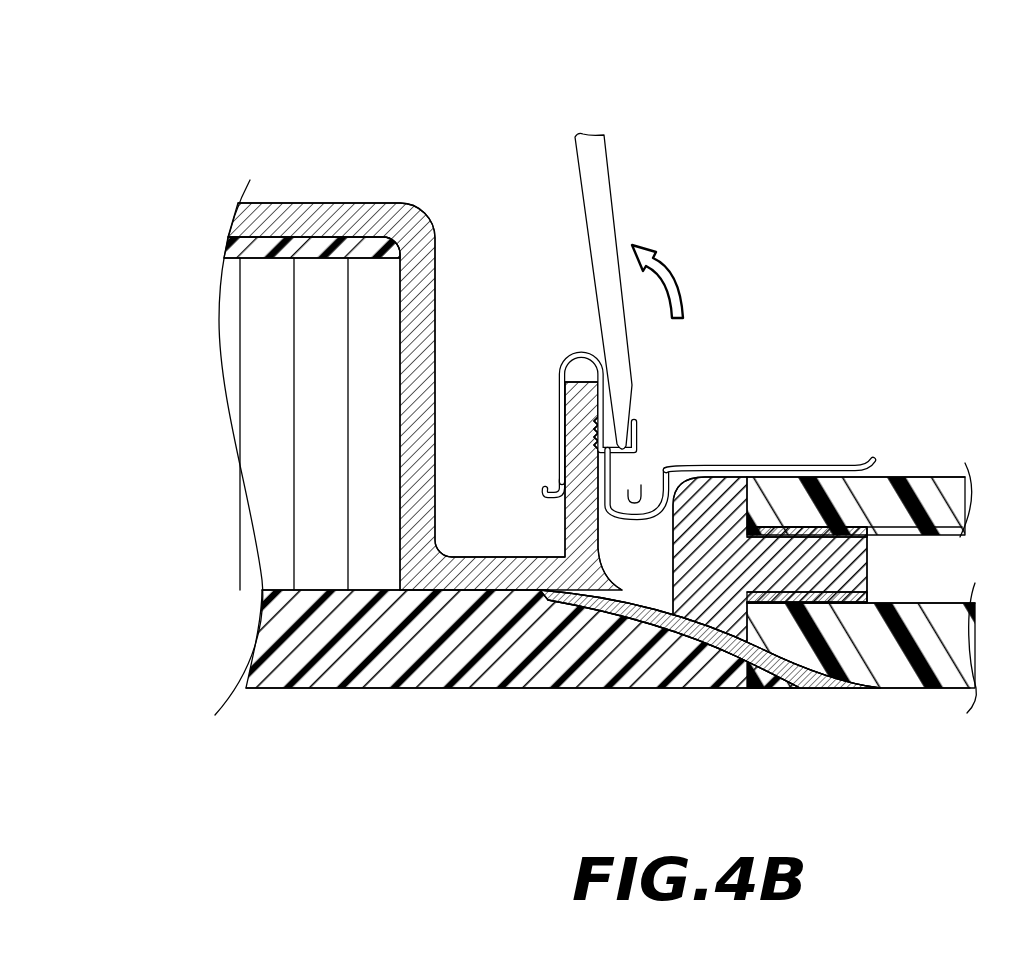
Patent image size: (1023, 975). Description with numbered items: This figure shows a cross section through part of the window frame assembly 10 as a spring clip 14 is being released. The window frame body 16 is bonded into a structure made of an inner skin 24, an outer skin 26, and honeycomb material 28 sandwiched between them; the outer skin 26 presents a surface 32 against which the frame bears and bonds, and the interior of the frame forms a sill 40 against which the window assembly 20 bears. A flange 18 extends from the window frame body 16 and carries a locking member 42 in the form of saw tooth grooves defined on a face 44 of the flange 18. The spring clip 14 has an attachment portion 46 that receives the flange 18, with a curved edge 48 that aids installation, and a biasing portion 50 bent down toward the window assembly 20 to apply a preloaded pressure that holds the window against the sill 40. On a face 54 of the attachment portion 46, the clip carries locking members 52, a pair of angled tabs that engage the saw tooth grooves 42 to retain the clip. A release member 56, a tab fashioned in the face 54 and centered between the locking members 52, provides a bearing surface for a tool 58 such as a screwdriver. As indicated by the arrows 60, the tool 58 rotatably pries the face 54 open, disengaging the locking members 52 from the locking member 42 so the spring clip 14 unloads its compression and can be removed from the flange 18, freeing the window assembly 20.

The window frame assembly 10 is at (448, 93).
The spring clip 14 is at (660, 433).
The window frame body 16 is at (340, 203).
The flange 18 is at (540, 530).
The window assembly 20 is at (817, 555).
The inner skin 24 is at (222, 243).
The outer skin 26 is at (280, 652).
The honeycomb material 28 is at (278, 457).
The surface 32 is at (688, 627).
The sill 40 is at (670, 603).
The locking member 42 is at (590, 422).
The face 44 is at (610, 523).
The attachment portion 46 is at (580, 381).
The edge 48 is at (549, 492).
The biasing portion 50 is at (735, 458).
The locking member 52 is at (638, 393).
The face 54 is at (630, 488).
The release member 56 is at (638, 440).
The tool 58 is at (628, 362).
The arrows 60 is at (679, 282).